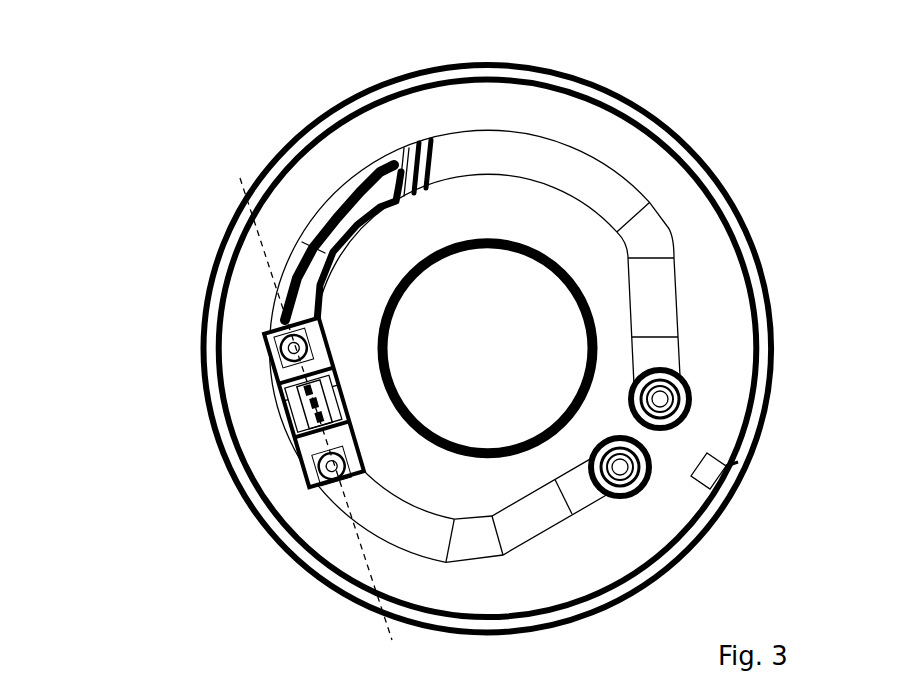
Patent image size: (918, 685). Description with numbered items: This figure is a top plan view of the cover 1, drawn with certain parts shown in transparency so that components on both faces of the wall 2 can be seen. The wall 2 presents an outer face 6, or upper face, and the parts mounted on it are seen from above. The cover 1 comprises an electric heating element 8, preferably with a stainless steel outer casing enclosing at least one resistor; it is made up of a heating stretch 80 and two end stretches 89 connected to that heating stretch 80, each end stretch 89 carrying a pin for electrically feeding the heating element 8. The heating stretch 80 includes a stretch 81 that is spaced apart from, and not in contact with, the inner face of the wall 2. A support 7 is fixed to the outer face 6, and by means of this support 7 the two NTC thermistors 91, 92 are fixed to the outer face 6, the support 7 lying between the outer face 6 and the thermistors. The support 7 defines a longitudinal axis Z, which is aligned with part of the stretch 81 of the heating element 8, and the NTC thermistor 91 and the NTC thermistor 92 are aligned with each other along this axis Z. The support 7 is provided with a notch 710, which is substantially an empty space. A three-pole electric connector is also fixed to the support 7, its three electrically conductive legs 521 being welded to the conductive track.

The cover 1 is at (406, 345).
The wall 2 is at (341, 137).
The outer face 6 is at (311, 172).
The support 7 is at (290, 394).
The heating element 8 is at (487, 292).
The heating stretch 80 is at (615, 149).
The stretch 81 is at (298, 408).
The end stretch 89 is at (683, 377).
The NTC thermistor 91 is at (312, 453).
The NTC thermistor 92 is at (285, 357).
The electrically conductive legs 521 is at (320, 388).
The notch 710 is at (330, 400).
The axis Z is at (385, 612).